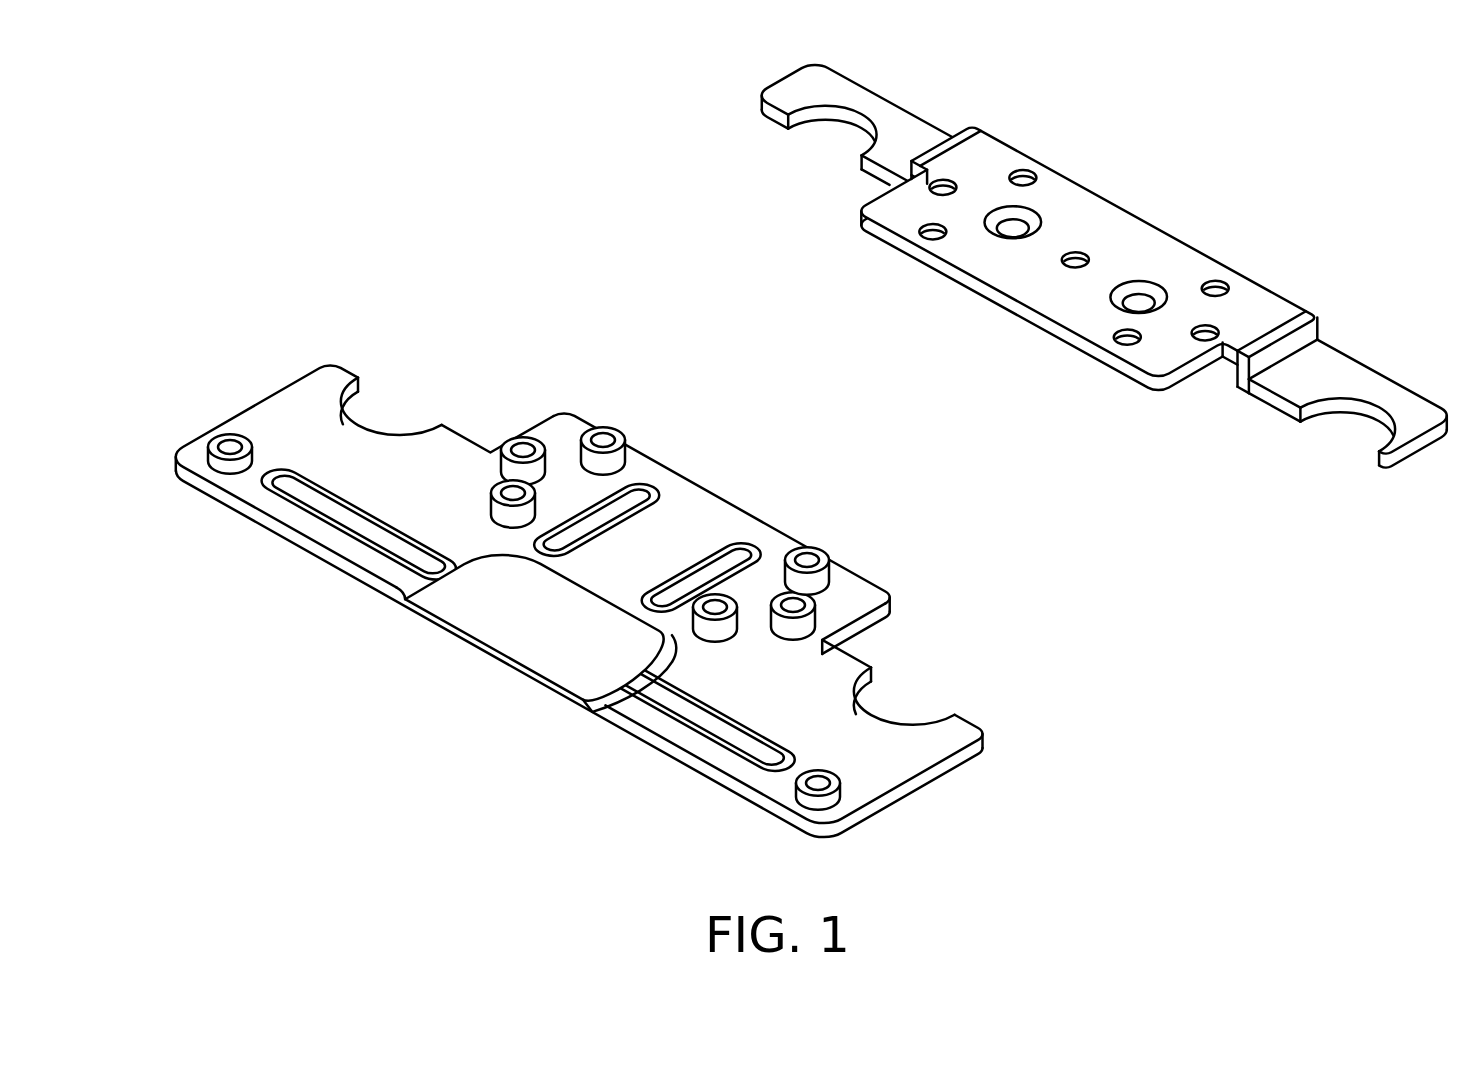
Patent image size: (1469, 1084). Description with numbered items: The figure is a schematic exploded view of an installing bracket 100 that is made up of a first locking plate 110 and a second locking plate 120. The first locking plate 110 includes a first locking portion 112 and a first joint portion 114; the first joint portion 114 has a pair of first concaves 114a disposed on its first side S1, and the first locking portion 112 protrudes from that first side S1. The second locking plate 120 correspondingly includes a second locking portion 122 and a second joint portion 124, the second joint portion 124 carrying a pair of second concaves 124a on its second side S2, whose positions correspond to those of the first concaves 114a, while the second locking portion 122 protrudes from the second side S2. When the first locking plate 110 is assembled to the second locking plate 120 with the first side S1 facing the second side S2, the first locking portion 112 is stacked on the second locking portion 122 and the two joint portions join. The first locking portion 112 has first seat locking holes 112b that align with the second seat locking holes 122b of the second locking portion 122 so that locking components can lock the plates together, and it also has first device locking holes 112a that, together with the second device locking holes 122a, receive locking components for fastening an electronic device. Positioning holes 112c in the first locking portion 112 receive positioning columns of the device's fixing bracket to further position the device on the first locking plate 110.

The installing bracket 100 is at (285, 116).
The first locking plate 110 is at (1196, 140).
The first locking portion 112 is at (1088, 205).
The first device locking hole 112a is at (940, 228).
The first seat locking hole 112b is at (1028, 170).
The positioning hole 112c is at (1132, 298).
The first joint portion 114 is at (890, 105).
The first concave 114a is at (825, 135).
The first side S1 is at (775, 104).
The second locking plate 120 is at (425, 656).
The second locking portion 122 is at (688, 532).
The second device locking hole 122a is at (230, 447).
The second seat locking hole 122b is at (513, 493).
The second joint portion 124 is at (342, 447).
The second concave 124a is at (392, 401).
The second side S2 is at (463, 432).